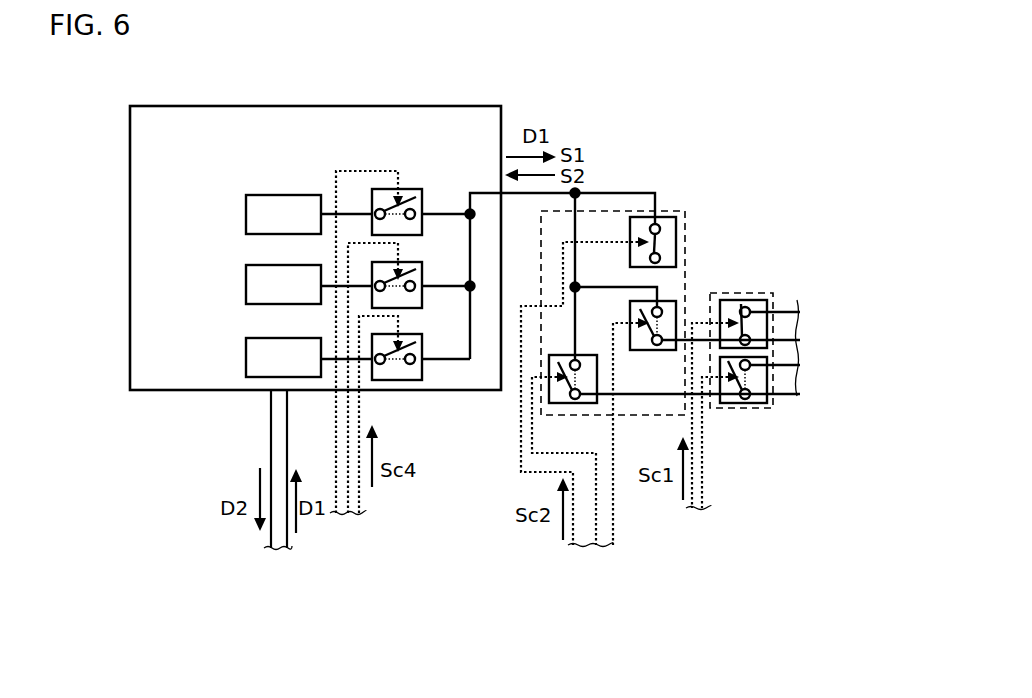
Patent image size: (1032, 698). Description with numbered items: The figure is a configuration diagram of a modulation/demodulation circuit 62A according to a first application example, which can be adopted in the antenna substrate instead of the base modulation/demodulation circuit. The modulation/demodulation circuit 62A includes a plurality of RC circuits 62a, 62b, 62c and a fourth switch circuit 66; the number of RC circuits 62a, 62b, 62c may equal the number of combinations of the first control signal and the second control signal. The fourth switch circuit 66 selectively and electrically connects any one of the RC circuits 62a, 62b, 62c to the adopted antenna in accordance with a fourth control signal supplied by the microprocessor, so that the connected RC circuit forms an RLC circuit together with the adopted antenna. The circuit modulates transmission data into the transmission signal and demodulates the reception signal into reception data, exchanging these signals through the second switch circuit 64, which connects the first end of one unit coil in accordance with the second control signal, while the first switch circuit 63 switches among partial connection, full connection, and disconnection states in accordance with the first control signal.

The modulation/demodulation circuit 62A is at (413, 104).
The RC circuit 62a is at (246, 362).
The RC circuit 62b is at (246, 288).
The RC circuit 62c is at (246, 218).
The second switch circuit 64 is at (678, 211).
The first switch circuit 63 is at (717, 408).
The fourth switch circuit 66 is at (432, 381).